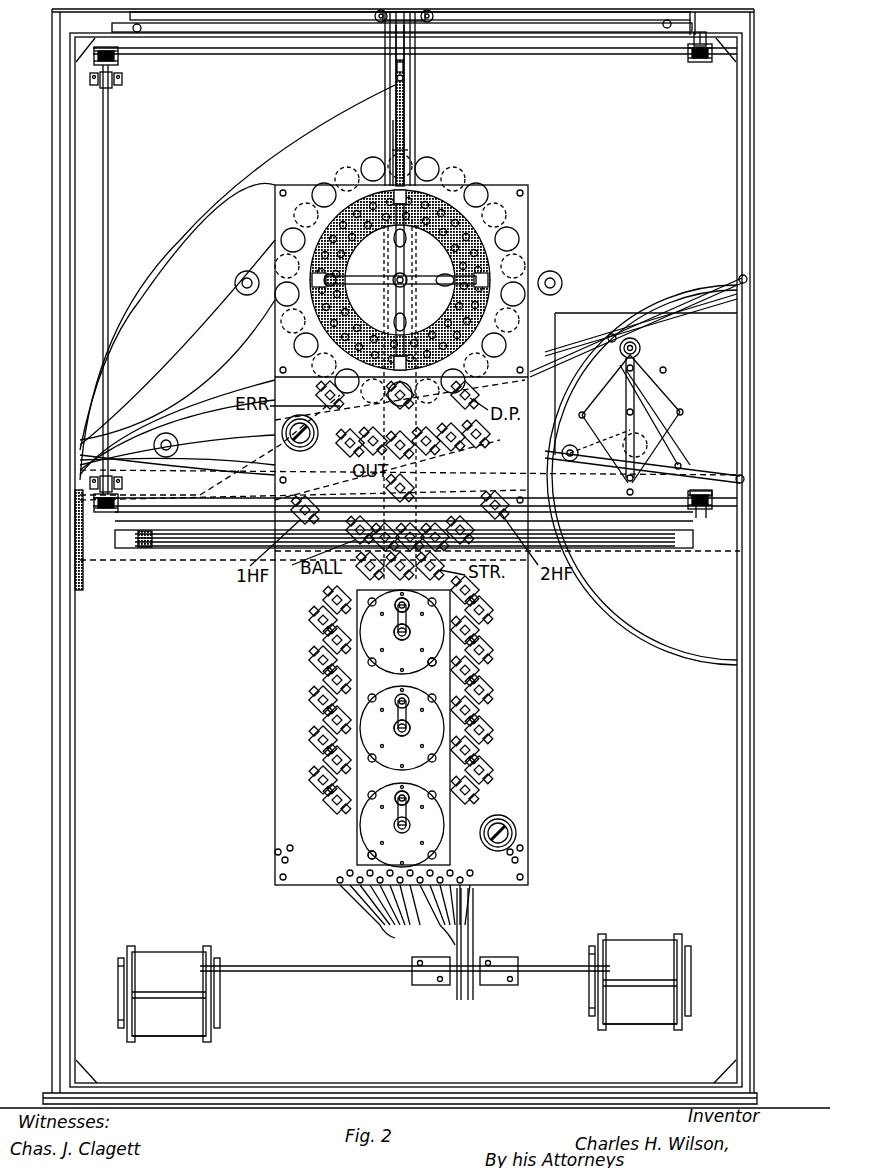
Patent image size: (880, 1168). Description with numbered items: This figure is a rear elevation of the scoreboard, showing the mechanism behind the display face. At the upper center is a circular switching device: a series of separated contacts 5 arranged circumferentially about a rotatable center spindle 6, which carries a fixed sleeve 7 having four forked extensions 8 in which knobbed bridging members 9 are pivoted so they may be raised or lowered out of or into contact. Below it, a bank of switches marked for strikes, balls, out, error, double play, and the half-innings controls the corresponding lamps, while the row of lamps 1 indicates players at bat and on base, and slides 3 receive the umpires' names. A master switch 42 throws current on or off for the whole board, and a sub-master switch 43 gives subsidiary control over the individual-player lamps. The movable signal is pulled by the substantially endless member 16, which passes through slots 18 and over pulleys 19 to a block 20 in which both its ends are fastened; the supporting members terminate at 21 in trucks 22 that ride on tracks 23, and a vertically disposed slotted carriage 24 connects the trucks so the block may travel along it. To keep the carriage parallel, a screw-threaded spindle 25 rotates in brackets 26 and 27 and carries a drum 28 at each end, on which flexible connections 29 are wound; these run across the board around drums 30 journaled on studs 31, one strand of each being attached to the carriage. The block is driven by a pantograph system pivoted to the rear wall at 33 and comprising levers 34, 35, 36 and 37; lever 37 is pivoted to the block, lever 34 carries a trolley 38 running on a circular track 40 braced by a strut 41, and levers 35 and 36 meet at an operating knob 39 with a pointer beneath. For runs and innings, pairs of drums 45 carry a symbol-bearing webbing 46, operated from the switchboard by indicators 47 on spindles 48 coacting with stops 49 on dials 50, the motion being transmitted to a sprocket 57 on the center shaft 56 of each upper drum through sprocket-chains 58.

The row of lamps 1 is at (332, 695).
The slides 3 is at (380, 450).
The separated contacts 5 is at (312, 316).
The center spindle 6 is at (408, 278).
The sleeve 7 is at (408, 284).
The forked extensions 8 is at (392, 284).
The bridging members 9 is at (365, 278).
The member 16 is at (416, 55).
The slots 18 is at (605, 20).
The pulleys 19 is at (425, 18).
The block 20 is at (398, 80).
The termination of supporting members 21 is at (390, 25).
The trucks 22 is at (381, 18).
The tracks 23 is at (183, 32).
The carriage 24 is at (413, 110).
The spindle 25 is at (130, 284).
The bracket 26 is at (119, 86).
The bracket 27 is at (119, 485).
The drums 28 is at (94, 58).
The flexible connections 29 is at (246, 54).
The drums 30 is at (703, 488).
The studs 31 is at (688, 48).
The pivot 33 is at (744, 476).
The lever 34 is at (660, 465).
The lever 35 is at (630, 400).
The lever 36 is at (703, 60).
The lever 37 is at (400, 160).
The trolley 38 is at (572, 470).
The operating knob 39 is at (641, 346).
The circular track 40 is at (688, 648).
The strut 41 is at (615, 335).
The master switch 42 is at (515, 825).
The sub-master switch 43 is at (282, 433).
The drums 45 is at (160, 960).
The webbing 46 is at (185, 998).
The indicators 47 is at (406, 622).
The spindles 48 is at (410, 632).
The stops 49 is at (434, 664).
The dials 50 is at (402, 728).
The center shaft 56 is at (312, 972).
The sprocket 57 is at (470, 995).
The sprocket-chains 58 is at (475, 945).